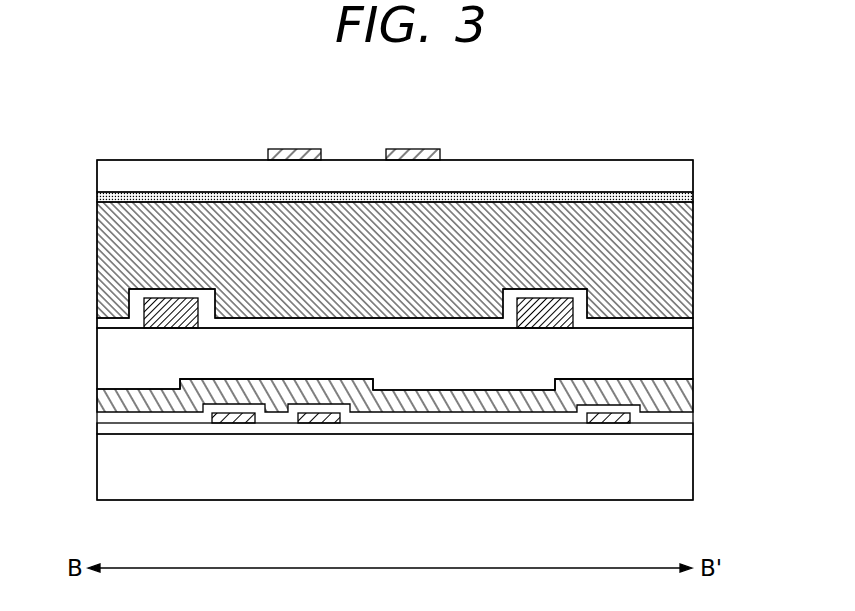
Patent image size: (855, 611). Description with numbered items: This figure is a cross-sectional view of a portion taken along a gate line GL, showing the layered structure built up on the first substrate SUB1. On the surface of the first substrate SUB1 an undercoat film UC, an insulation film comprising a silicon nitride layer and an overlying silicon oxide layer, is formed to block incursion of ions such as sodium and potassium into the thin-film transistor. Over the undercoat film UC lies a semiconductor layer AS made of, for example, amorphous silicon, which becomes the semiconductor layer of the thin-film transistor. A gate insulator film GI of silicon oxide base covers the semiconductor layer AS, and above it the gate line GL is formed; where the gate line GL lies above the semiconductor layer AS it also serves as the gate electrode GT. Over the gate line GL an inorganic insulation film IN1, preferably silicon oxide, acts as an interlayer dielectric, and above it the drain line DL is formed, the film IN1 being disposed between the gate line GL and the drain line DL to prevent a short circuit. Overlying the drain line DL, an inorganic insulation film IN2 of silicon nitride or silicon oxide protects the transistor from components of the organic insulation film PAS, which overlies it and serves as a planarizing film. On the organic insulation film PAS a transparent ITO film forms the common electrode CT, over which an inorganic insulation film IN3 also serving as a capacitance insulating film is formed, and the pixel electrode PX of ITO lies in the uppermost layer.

The pixel electrode PX is at (298, 155).
The common electrode CT is at (101, 196).
The inorganic insulation film IN3 is at (683, 179).
The organic insulation film PAS is at (683, 241).
The drain line DL is at (152, 311).
The inorganic insulation film IN2 is at (682, 323).
The inorganic insulation film IN1 is at (683, 357).
The gate electrode GT is at (278, 378).
The gate insulator film GI is at (108, 418).
The gate line GL is at (683, 393).
The semiconductor layer AS is at (230, 416).
The undercoat film UC is at (680, 432).
The first substrate SUB1 is at (680, 478).